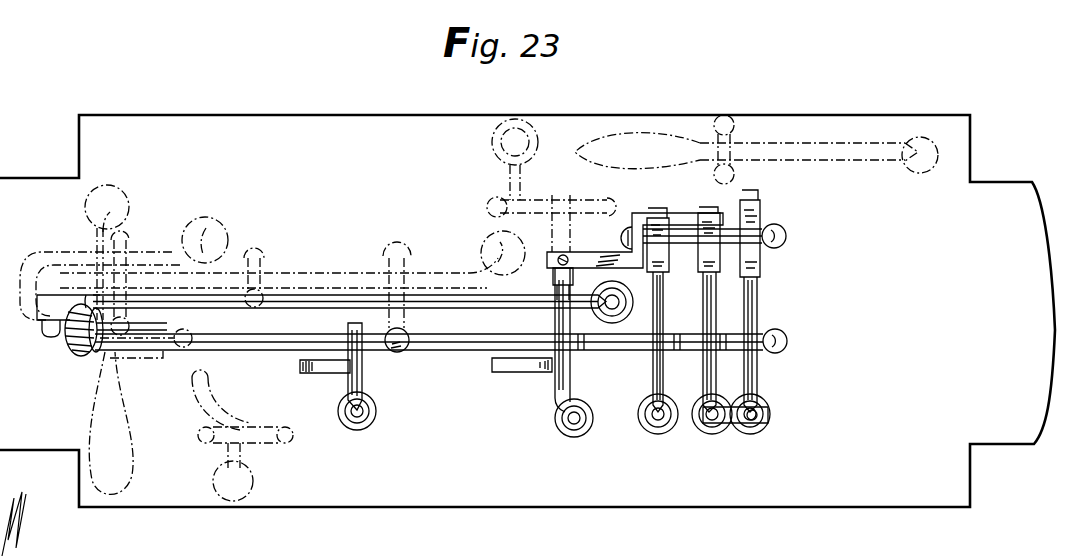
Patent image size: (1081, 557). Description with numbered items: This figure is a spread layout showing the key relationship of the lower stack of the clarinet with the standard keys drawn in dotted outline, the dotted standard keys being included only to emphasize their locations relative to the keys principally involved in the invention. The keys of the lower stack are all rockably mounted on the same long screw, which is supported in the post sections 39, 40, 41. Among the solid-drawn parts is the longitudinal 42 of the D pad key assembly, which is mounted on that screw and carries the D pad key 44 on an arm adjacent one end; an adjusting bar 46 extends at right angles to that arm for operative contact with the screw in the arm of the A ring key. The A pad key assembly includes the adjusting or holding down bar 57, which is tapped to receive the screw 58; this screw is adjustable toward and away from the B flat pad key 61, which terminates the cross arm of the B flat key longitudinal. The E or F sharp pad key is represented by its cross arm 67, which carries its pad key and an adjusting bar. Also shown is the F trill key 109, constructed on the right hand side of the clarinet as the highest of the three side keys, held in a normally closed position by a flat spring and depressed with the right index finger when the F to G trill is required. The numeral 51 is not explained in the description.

The post section 39 is at (80, 354).
The F trill key 109 is at (313, 297).
The longitudinal 42 is at (268, 337).
The post section 41 is at (788, 340).
The adjusting bar 46 is at (312, 373).
The D pad key 44 is at (362, 426).
The post section 40 is at (402, 352).
The cross arm 67 is at (566, 384).
The roller 51 is at (664, 432).
The adjusting or holding down bar 57 is at (728, 432).
The B flat pad key 61 is at (760, 430).
The screw 58 is at (760, 414).